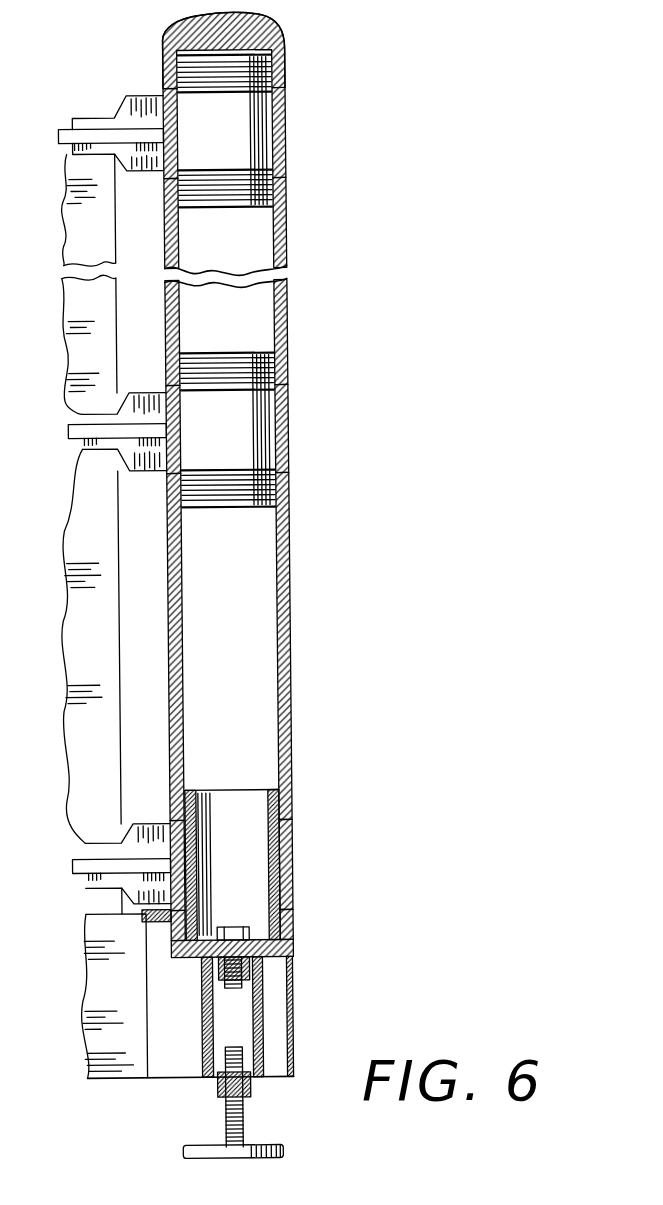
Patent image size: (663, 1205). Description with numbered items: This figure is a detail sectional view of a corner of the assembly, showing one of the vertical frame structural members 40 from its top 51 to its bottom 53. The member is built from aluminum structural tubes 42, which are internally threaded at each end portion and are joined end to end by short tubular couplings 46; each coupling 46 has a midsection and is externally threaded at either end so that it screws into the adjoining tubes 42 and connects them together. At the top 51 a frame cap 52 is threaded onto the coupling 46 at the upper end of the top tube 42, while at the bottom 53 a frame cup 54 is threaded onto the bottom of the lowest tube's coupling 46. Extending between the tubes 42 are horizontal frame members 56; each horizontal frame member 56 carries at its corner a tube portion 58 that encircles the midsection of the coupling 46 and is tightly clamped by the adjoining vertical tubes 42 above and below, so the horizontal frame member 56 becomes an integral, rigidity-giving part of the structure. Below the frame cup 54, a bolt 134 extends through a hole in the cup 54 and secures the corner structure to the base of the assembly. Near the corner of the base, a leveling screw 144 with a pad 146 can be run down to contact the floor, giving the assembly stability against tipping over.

The vertical frame structural member 40 is at (320, 575).
The structural tube 42 is at (257, 322).
The tubular coupling 46 is at (255, 136).
The top 51 is at (284, 17).
The frame cap 52 is at (196, 28).
The bottom 53 is at (308, 882).
The frame cup 54 is at (288, 937).
The horizontal frame member 56 is at (128, 157).
The tube portion 58 is at (288, 162).
The bolt 134 is at (228, 927).
The leveling screw 144 is at (243, 1112).
The pad 146 is at (280, 1150).